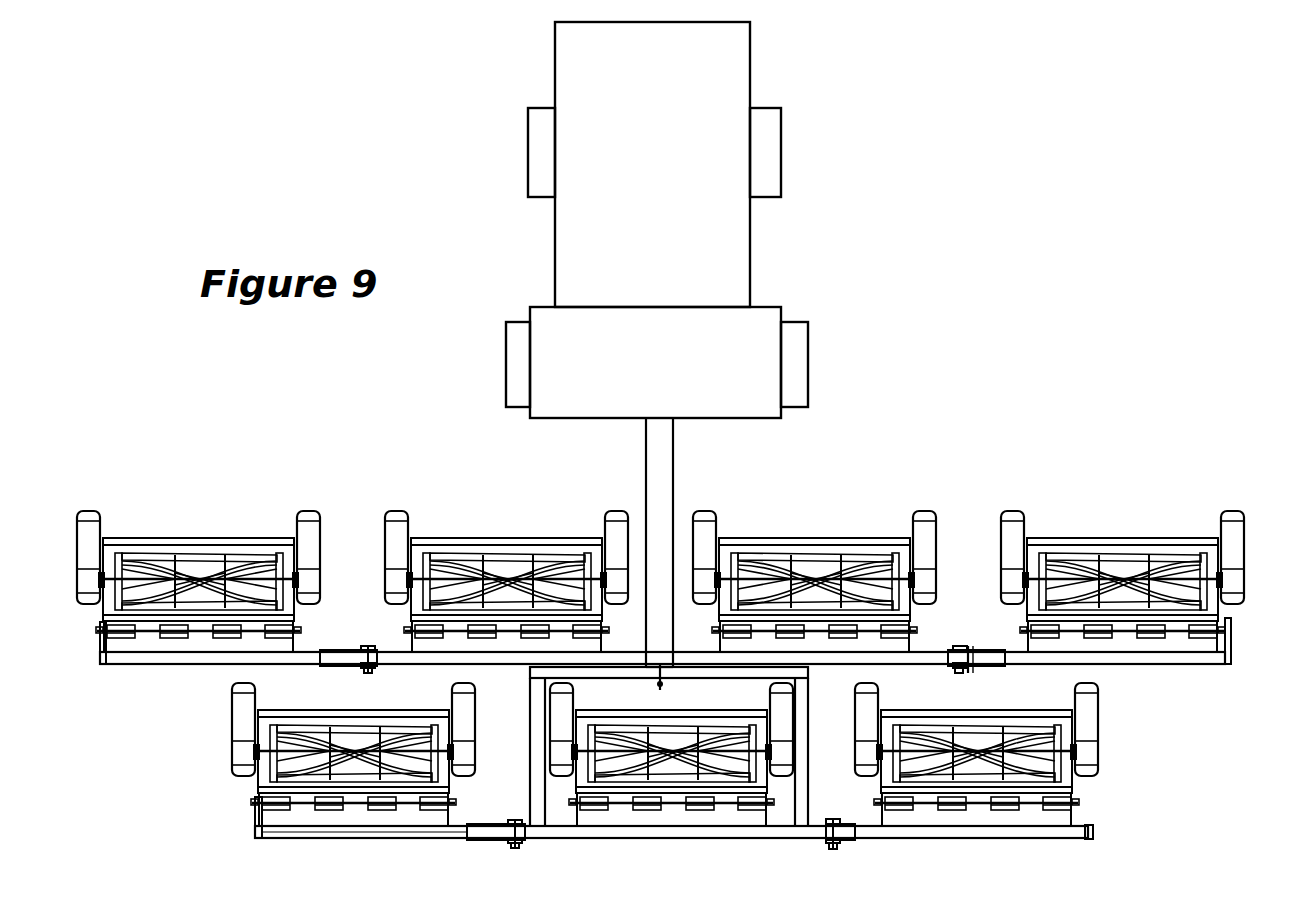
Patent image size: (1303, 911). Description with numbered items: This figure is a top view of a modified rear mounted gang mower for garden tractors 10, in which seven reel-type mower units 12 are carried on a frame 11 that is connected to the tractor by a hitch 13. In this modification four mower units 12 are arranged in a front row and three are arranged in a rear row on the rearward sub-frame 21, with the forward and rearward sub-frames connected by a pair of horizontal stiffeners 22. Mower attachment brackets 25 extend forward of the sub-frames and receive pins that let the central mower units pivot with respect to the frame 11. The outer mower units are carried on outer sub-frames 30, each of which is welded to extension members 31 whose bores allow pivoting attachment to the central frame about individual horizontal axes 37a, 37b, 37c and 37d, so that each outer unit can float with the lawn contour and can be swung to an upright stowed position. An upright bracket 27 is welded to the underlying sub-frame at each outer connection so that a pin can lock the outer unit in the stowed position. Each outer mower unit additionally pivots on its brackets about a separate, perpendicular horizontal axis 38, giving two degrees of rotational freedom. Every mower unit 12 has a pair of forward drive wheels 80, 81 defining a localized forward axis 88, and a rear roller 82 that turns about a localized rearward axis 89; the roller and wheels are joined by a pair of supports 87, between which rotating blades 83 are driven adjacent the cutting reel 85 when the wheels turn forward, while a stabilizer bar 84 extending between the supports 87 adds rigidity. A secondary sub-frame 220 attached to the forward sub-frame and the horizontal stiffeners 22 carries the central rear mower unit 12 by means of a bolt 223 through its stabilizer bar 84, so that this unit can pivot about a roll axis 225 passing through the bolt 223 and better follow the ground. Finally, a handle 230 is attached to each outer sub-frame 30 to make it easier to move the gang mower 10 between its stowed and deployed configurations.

The gang mower for garden tractors 10 is at (1007, 378).
The frame 11 is at (743, 846).
The reel-type mower unit 12 is at (186, 530).
The hitch 13 is at (673, 466).
The rearward sub-frame 21 is at (789, 842).
The horizontal stiffener 22 is at (530, 792).
The mower attachment bracket 25 is at (471, 840).
The upright bracket 27 is at (828, 825).
The outer sub-frame 30 is at (1160, 664).
The extension member 31 is at (975, 650).
The horizontal axis 37a is at (957, 672).
The horizontal axis 37b is at (834, 853).
The horizontal axis 37c is at (519, 847).
The horizontal axis 37d is at (368, 672).
The horizontal axis 38 is at (1232, 624).
The forward drive wheel 80 is at (330, 544).
The forward drive wheel 81 is at (96, 524).
The rear roller 82 is at (190, 665).
The rotating blades 83 is at (198, 557).
The stabilizer bar 84 is at (198, 536).
The cutting reel 85 is at (198, 536).
The support 87 is at (190, 665).
The localized forward axis 88 is at (216, 729).
The localized rearward axis 89 is at (334, 819).
The secondary sub-frame 220 is at (590, 681).
The bolt 223 is at (658, 681).
The roll axis 225 is at (665, 690).
The handle 230 is at (1094, 828).